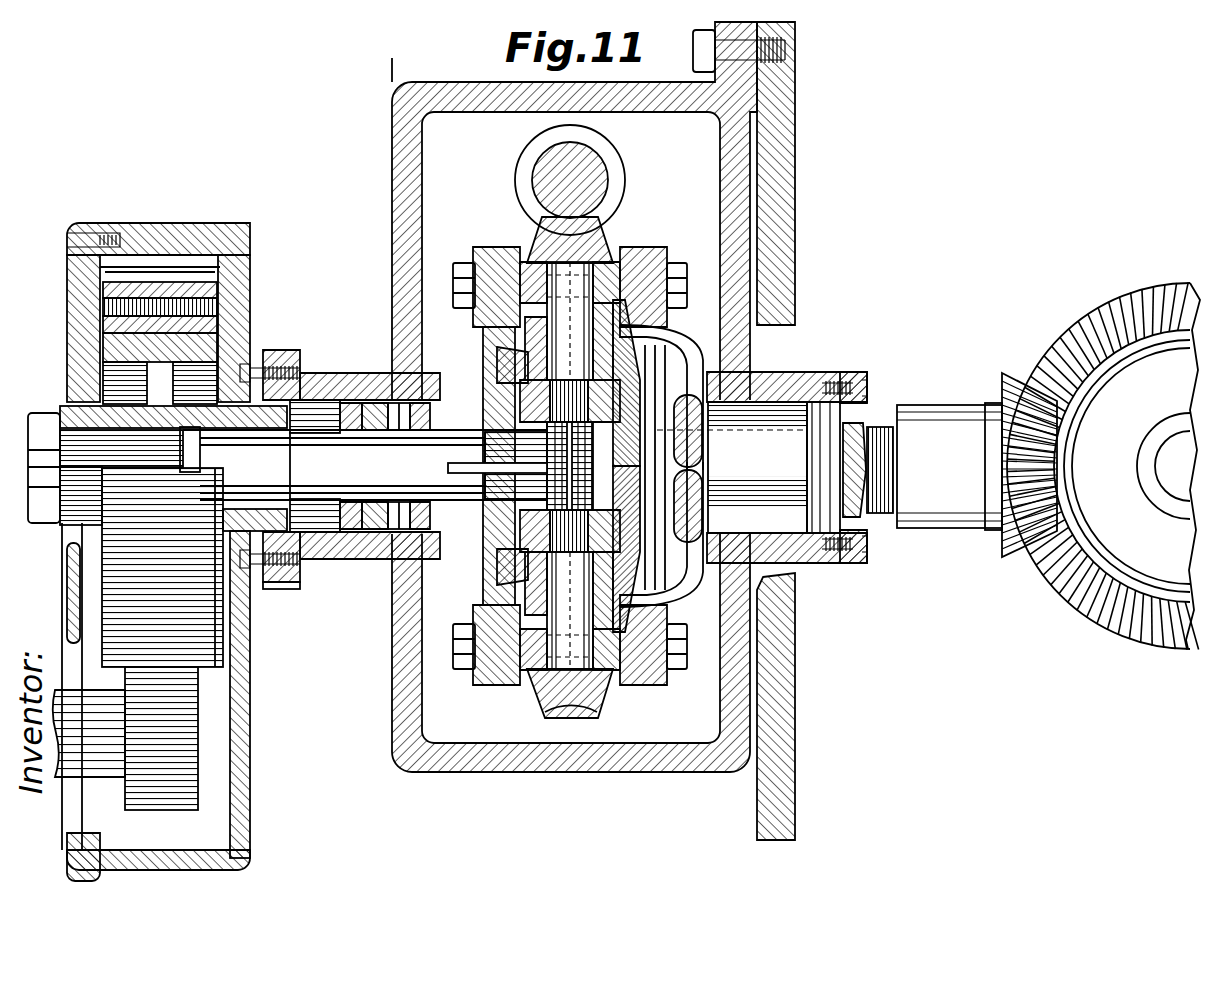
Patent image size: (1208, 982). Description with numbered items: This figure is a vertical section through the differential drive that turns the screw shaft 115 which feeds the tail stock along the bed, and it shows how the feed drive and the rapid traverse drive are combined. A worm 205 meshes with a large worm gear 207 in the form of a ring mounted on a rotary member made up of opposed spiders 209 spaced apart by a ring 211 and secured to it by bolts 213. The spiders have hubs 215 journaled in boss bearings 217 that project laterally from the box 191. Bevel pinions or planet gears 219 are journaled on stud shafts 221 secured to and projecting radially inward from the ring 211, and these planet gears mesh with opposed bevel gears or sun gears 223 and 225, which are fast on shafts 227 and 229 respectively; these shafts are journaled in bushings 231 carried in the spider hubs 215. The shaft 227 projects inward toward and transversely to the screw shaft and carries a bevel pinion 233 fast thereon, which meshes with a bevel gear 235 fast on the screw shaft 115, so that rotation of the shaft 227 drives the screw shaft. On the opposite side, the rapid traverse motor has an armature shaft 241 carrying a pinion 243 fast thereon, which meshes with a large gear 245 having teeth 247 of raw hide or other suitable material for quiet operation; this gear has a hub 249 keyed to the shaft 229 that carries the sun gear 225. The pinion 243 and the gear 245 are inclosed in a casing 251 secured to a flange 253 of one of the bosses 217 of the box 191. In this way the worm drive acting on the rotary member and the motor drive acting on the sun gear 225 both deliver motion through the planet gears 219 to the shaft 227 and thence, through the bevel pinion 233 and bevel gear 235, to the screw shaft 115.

The screw shaft 115 is at (1148, 462).
The box 191 is at (392, 190).
The worm 205 is at (515, 183).
The worm gear 207 is at (612, 237).
The spiders 209 is at (523, 268).
The ring 211 is at (612, 283).
The bolts 213 is at (672, 292).
The hubs 215 is at (362, 373).
The boss bearings 217 is at (320, 370).
The bevel pinions 219 is at (490, 365).
The stud shafts 221 is at (555, 287).
The bevel gear 223 is at (658, 342).
The bevel gear 225 is at (462, 372).
The shaft 227 is at (858, 425).
The shaft 229 is at (392, 400).
The bushings 231 is at (373, 438).
The bevel pinion 233 is at (997, 403).
The bevel gear 235 is at (1080, 323).
The armature shaft 241 is at (98, 778).
The pinion 243 is at (200, 718).
The gear 245 is at (215, 628).
The teeth 247 is at (123, 320).
The hub 249 is at (68, 412).
The casing 251 is at (66, 565).
The flange 253 is at (286, 588).